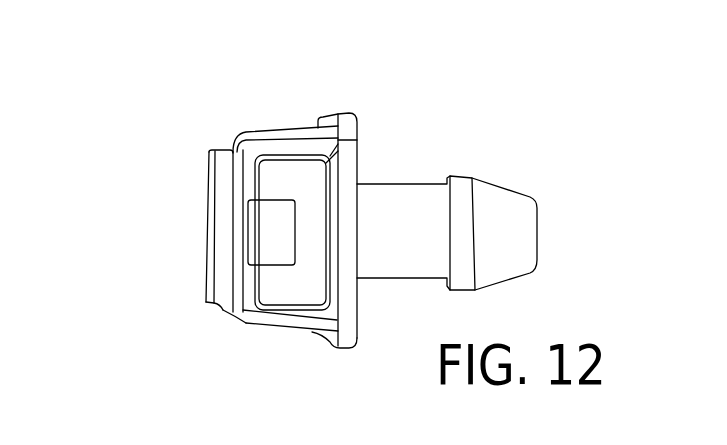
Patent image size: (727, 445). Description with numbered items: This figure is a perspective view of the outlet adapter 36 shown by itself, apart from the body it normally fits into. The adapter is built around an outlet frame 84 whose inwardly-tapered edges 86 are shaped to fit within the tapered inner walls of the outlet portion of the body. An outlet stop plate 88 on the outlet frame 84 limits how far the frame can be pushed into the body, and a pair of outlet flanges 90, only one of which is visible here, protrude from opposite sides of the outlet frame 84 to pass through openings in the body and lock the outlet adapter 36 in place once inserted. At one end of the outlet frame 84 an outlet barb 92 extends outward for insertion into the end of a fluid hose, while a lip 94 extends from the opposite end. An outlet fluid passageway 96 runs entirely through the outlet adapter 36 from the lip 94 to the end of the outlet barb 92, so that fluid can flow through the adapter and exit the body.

The outlet adapter 36 is at (417, 140).
The outlet frame 84 is at (272, 128).
The inwardly-tapered edges 86 is at (282, 328).
The outlet stop plate 88 is at (357, 158).
The outlet flange 90 is at (272, 253).
The outlet barb 92 is at (407, 183).
The lip 94 is at (225, 167).
The outlet fluid passageway 96 is at (213, 245).